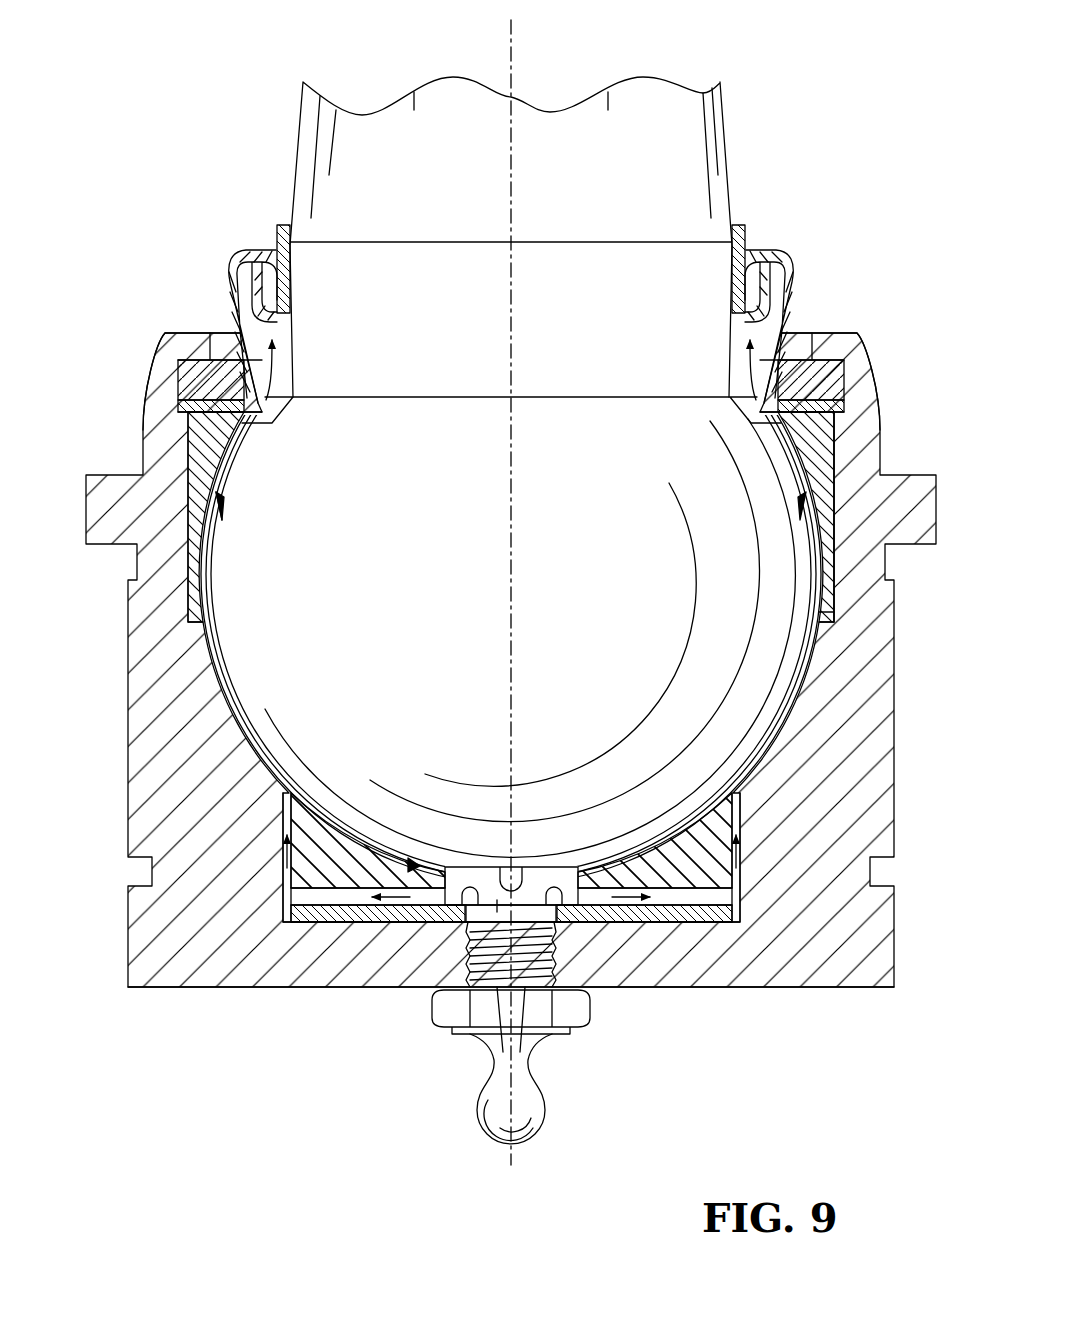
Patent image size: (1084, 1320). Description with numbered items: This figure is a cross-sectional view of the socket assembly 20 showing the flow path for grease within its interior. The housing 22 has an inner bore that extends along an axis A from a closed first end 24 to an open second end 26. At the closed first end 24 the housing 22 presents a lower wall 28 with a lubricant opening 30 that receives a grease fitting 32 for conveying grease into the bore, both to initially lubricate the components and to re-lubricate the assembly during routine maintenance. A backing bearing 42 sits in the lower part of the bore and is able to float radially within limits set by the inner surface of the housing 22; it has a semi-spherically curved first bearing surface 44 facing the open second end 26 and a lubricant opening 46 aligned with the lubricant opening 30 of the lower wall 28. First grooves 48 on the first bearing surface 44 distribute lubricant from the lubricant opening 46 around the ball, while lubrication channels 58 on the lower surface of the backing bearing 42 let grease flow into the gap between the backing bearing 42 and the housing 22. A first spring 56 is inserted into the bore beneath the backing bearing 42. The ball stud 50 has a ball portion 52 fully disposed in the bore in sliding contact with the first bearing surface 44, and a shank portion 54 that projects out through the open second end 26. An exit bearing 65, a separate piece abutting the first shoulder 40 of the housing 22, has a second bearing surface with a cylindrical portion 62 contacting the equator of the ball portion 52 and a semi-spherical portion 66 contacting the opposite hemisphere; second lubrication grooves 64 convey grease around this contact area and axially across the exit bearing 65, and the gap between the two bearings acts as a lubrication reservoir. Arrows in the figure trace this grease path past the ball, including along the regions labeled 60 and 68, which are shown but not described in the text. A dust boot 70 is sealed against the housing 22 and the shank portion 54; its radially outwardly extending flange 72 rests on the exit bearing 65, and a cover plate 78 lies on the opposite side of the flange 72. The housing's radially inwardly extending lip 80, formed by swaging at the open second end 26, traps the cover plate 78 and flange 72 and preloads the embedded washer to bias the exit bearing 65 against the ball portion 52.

The socket assembly 20 is at (823, 162).
The housing 22 is at (122, 638).
The closed first end 24 is at (680, 906).
The open second end 26 is at (808, 336).
The lower wall 28 is at (320, 962).
The lubricant opening 30 is at (480, 988).
The grease fitting 32 is at (530, 1108).
The first shoulder 40 is at (830, 604).
The backing bearing 42 is at (716, 876).
The first bearing surface 44 is at (362, 838).
The lubricant opening 46 is at (470, 870).
The first grooves 48 is at (414, 862).
The ball stud 50 is at (728, 136).
The ball portion 52 is at (530, 638).
The shank portion 54 is at (511, 237).
The first spring 56 is at (302, 932).
The lubrication channels 58 is at (300, 900).
The right bearing insert 60 is at (824, 576).
The cylindrical portion 62 is at (207, 568).
The second lubrication grooves 64 is at (208, 606).
The exit bearing 65 is at (840, 464).
The semi-spherical portion 66 is at (224, 488).
The liner flow path 68 is at (802, 428).
The dust boot 70 is at (800, 251).
The radially outwardly extending flange 72 is at (805, 408).
The cover plate 78 is at (208, 388).
The radially inwardly extending lip 80 is at (196, 334).
The axis A is at (516, 34).